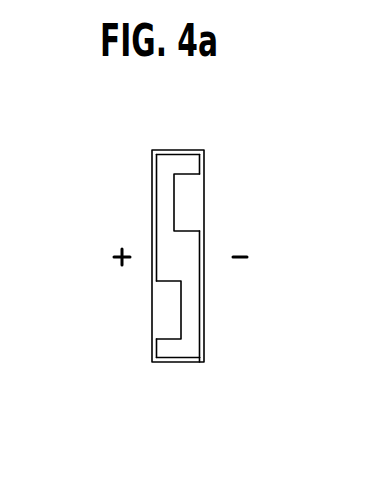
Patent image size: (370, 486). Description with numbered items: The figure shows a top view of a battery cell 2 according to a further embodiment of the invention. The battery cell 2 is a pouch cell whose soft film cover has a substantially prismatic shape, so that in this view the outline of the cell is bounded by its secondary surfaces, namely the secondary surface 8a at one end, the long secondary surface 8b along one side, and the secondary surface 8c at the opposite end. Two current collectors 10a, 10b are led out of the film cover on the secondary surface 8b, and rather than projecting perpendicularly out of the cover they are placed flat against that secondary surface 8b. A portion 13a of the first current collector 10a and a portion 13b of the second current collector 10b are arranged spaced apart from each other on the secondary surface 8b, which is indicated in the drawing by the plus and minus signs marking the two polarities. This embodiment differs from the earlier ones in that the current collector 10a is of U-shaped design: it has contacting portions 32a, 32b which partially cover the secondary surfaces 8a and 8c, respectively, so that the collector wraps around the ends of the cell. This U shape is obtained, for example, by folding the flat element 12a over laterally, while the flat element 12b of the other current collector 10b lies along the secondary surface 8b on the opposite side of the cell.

The battery cell 2 is at (107, 371).
The secondary surface 8a is at (198, 362).
The secondary surface 8b is at (168, 245).
The secondary surface 8c is at (200, 152).
The current collector 10a is at (170, 312).
The current collector 10b is at (186, 200).
The flat element 12a is at (153, 183).
The flat element 12b is at (203, 290).
The portion of current collector 13a is at (160, 329).
The portion of current collector 13b is at (193, 190).
The contacting portion 32a is at (167, 151).
The contacting portion 32b is at (165, 363).